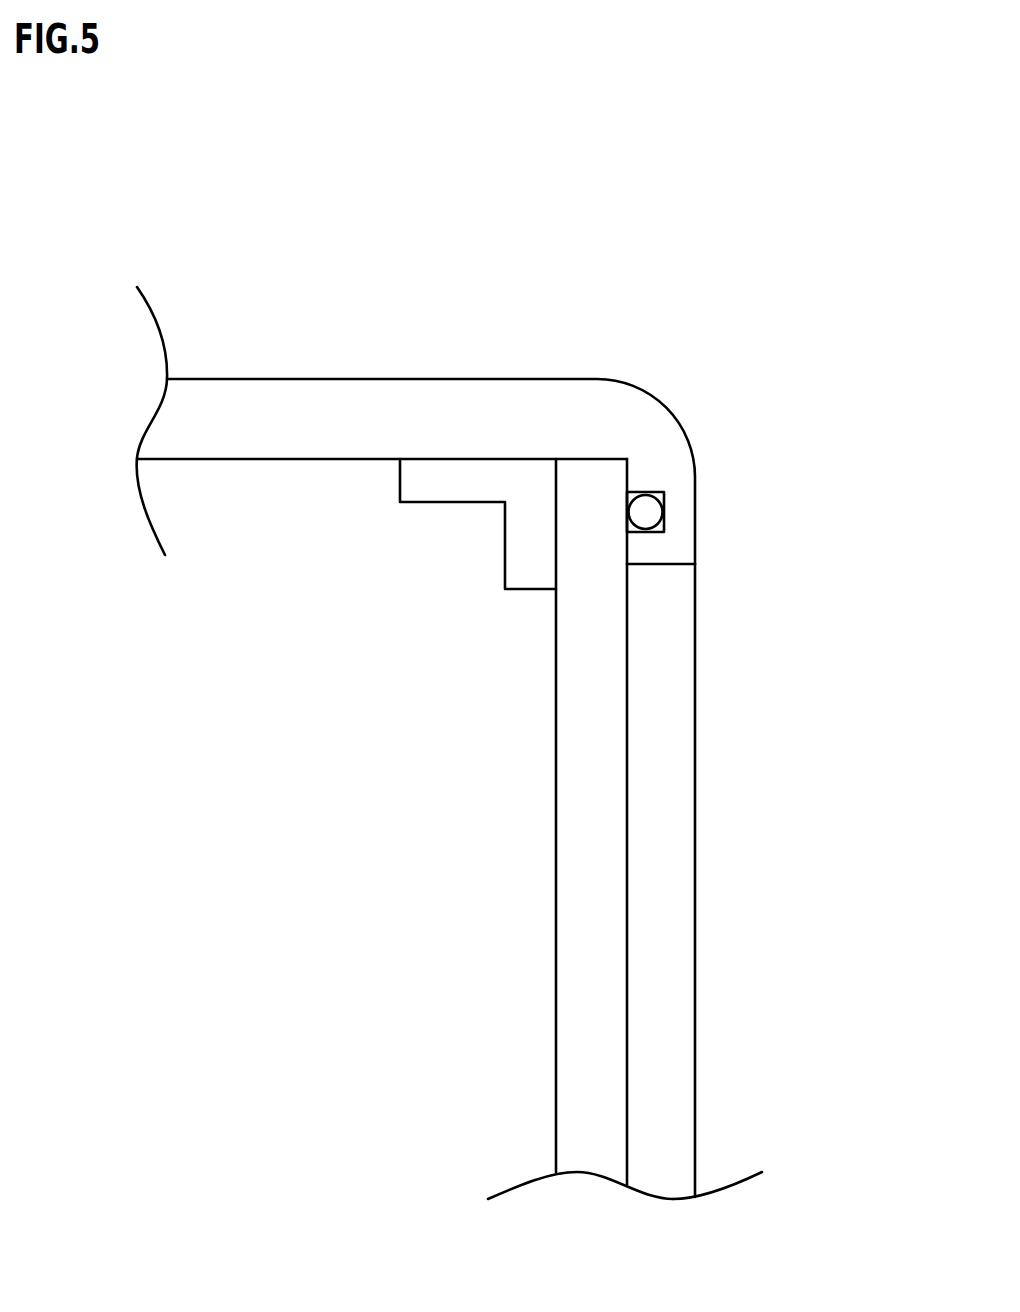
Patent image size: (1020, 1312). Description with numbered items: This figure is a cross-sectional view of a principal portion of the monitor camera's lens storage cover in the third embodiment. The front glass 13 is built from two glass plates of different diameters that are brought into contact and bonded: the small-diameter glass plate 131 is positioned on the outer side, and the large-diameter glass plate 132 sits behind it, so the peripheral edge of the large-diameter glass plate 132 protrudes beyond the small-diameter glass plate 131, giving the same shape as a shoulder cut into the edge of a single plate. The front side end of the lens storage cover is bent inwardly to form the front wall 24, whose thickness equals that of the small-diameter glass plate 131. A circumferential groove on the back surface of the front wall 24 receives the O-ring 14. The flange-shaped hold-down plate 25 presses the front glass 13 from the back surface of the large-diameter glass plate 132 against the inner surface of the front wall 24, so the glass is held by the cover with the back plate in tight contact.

The front glass 13 is at (636, 829).
The small-diameter glass plate 131 is at (696, 985).
The large-diameter glass plate 132 is at (556, 905).
The O-ring 14 is at (648, 503).
The front wall 24 is at (696, 510).
The hold-down plate 25 is at (505, 543).